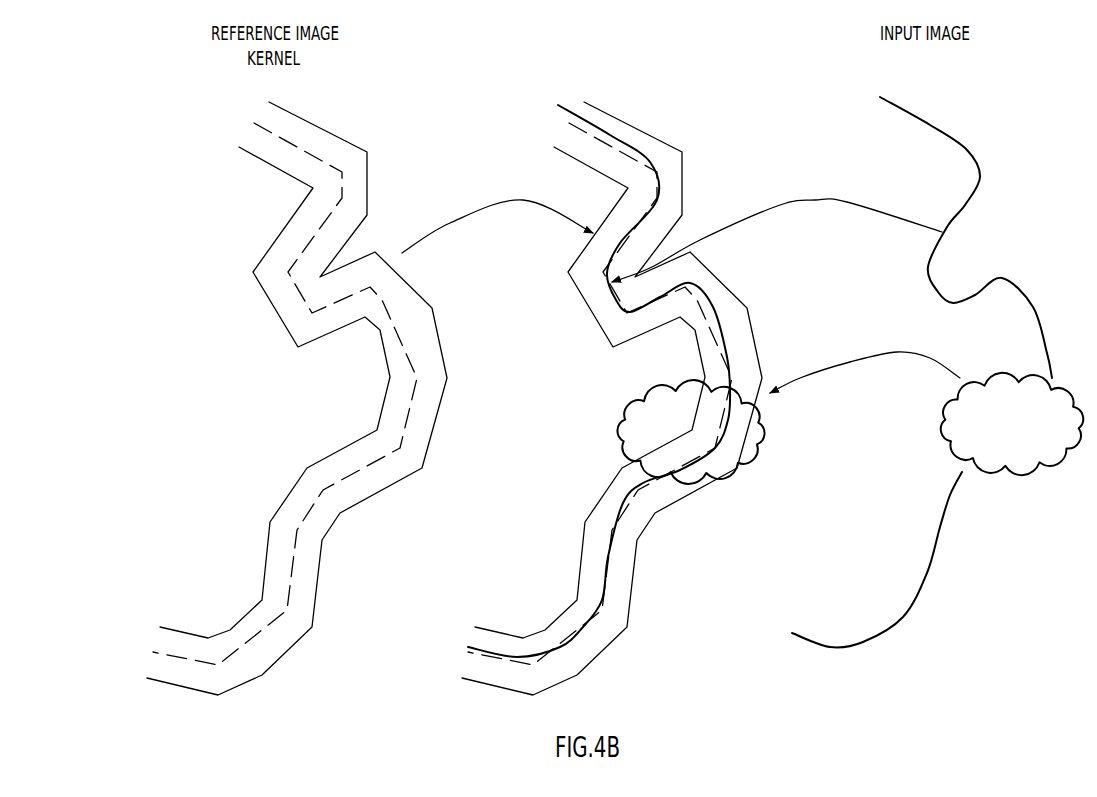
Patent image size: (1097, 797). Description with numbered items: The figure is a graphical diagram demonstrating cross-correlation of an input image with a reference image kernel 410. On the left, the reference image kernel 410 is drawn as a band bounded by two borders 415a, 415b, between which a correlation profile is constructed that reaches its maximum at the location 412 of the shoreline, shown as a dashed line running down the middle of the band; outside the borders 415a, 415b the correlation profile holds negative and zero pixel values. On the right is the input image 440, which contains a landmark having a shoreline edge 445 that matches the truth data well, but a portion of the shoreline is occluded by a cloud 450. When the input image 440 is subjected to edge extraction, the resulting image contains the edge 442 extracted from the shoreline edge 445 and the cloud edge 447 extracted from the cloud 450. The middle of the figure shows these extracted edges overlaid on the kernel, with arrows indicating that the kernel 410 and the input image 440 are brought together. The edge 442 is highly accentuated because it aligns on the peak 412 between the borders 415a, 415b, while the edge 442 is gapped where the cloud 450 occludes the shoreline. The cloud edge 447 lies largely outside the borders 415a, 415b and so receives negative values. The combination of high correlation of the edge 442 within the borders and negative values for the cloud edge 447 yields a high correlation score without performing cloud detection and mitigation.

The reference image kernel 410 is at (286, 398).
The location of the shoreline 412 is at (343, 195).
The border 415a is at (287, 495).
The border 415b is at (333, 523).
The input image 440 is at (938, 369).
The edge 442 is at (700, 303).
The shoreline edge 445 is at (943, 133).
The cloud edge 447 is at (760, 463).
The cloud 450 is at (1038, 472).